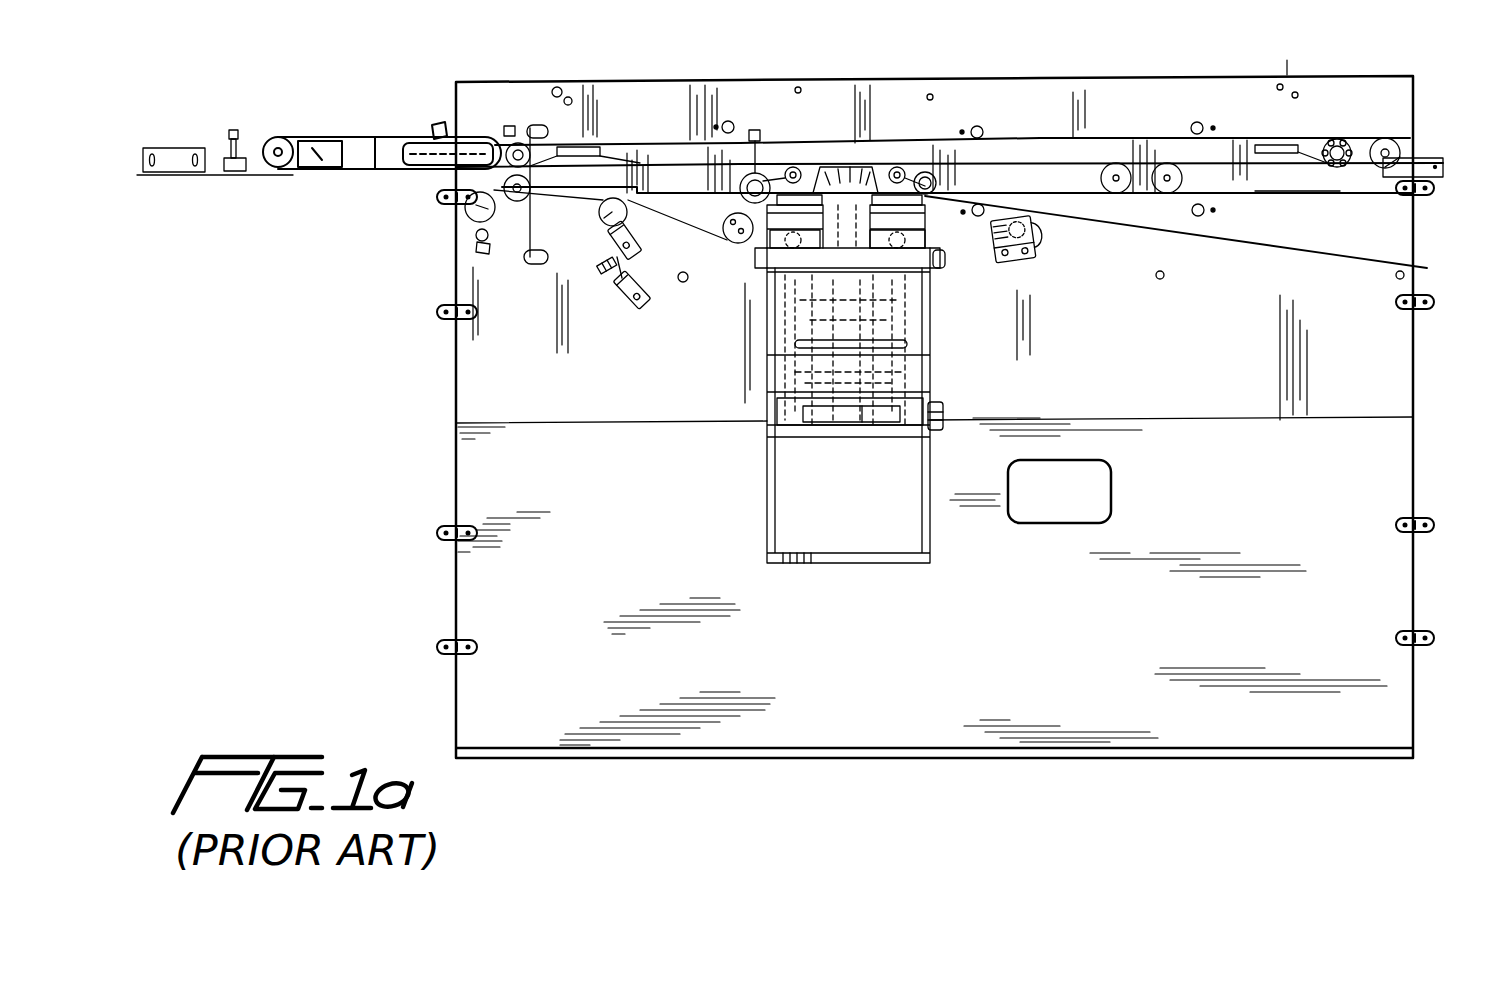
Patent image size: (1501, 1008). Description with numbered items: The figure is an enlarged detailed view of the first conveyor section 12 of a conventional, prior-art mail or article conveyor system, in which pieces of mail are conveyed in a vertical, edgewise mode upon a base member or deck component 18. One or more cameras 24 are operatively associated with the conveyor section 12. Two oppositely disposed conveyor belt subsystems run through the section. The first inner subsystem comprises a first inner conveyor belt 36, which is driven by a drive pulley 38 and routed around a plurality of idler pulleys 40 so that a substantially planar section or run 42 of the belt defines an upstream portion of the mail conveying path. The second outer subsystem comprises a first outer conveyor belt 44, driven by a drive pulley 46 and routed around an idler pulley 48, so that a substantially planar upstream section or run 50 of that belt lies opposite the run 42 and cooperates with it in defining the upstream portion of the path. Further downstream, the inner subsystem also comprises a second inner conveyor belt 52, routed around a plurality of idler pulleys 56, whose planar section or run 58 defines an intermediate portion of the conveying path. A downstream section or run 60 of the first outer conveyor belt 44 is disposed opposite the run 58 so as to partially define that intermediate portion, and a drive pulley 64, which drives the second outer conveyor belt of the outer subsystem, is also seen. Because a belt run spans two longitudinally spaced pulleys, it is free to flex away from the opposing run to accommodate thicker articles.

The first conveyor section 12 is at (1195, 708).
The deck component 18 is at (1133, 603).
The camera 24 is at (937, 372).
The first inner conveyor belt 36 is at (695, 235).
The drive pulley 38 is at (756, 130).
The idler pulleys 40 is at (468, 216).
The planar section or run 42 is at (572, 168).
The first outer conveyor belt 44 is at (1003, 143).
The drive pulley 46 is at (523, 142).
The idler pulley 48 is at (1392, 140).
The upstream section or run 50 is at (637, 192).
The second inner conveyor belt 52 is at (1240, 242).
The idler pulleys 56 is at (903, 166).
The planar section or run 58 is at (1287, 172).
The downstream section or run 60 is at (1120, 197).
The drive pulley 64 is at (1345, 140).